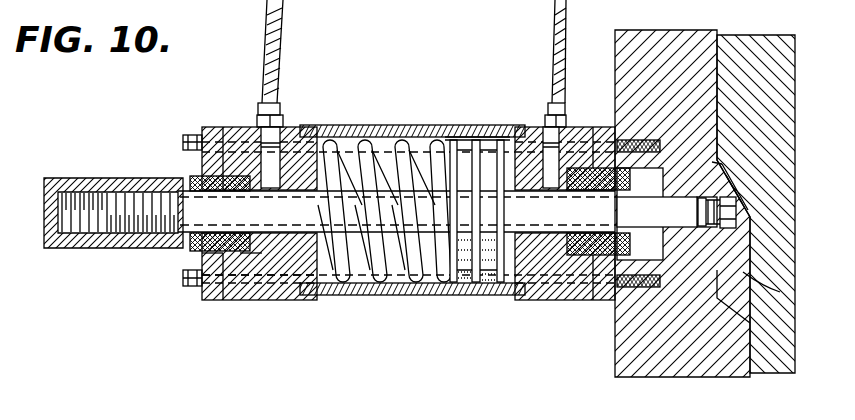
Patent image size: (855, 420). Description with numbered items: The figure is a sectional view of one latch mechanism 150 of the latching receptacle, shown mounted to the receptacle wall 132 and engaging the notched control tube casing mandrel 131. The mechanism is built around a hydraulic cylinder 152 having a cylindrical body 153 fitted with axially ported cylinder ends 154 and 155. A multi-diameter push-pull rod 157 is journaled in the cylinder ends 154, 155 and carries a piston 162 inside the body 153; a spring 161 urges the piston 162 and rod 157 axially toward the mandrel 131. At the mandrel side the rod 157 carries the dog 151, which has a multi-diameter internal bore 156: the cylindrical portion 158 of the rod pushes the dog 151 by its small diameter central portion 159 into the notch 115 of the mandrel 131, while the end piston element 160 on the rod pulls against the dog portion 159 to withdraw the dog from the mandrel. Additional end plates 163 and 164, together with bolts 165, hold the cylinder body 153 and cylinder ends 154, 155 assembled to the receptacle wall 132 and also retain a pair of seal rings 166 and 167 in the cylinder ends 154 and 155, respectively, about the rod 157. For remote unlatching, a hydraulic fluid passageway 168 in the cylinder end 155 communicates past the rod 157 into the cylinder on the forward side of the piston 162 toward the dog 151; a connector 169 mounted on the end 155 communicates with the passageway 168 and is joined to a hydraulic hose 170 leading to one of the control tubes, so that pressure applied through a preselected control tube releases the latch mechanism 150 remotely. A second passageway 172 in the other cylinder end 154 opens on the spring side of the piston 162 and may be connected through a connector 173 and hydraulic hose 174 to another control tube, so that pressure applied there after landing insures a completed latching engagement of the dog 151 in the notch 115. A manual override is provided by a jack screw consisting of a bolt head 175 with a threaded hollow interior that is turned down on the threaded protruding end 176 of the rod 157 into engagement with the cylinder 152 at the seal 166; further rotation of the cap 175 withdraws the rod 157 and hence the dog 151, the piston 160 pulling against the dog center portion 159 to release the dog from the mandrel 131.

The notch 115 is at (726, 175).
The mandrel 131 is at (765, 42).
The receptacle wall 132 is at (680, 32).
The latch mechanism 150 is at (395, 242).
The dog 151 is at (780, 292).
The hydraulic cylinder 152 is at (415, 135).
The cylindrical body 153 is at (458, 135).
The cylinder end 154 is at (312, 262).
The cylinder end 155 is at (553, 300).
The multi-diameter internal bore 156 is at (737, 221).
The push-pull rod 157 is at (643, 217).
The cylindrical portion 158 is at (678, 222).
The small diameter central portion 159 is at (700, 204).
The end piston element 160 is at (706, 212).
The spring 161 is at (410, 265).
The piston 162 is at (488, 283).
The end plate 163 is at (215, 300).
The end plate 164 is at (613, 280).
The bolts 165 is at (268, 300).
The seal ring 166 is at (200, 180).
The seal ring 167 is at (578, 275).
The hydraulic fluid passageway 168 is at (556, 150).
The connector 169 is at (548, 118).
The hydraulic hose 170 is at (553, 28).
The second passageway 172 is at (278, 153).
The connector 173 is at (282, 120).
The hydraulic hose 174 is at (283, 27).
The bolt head 175 is at (80, 183).
The protruding end 176 is at (122, 233).